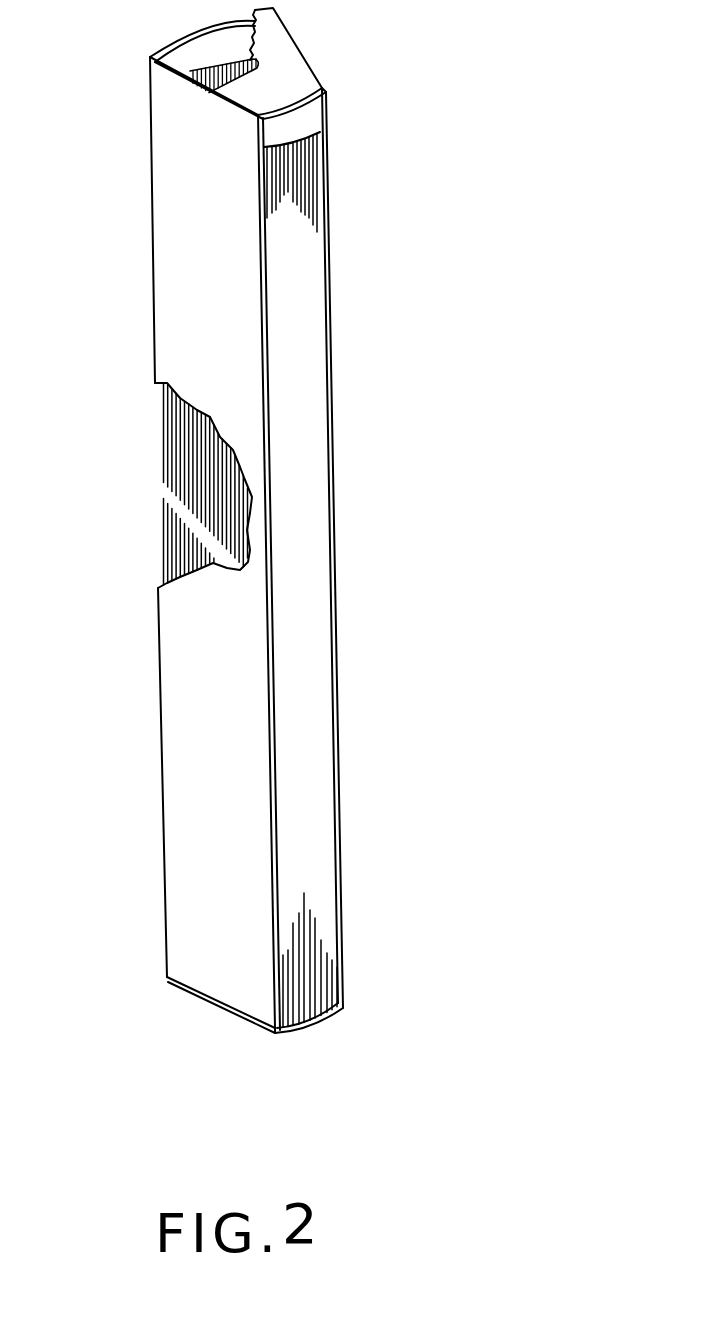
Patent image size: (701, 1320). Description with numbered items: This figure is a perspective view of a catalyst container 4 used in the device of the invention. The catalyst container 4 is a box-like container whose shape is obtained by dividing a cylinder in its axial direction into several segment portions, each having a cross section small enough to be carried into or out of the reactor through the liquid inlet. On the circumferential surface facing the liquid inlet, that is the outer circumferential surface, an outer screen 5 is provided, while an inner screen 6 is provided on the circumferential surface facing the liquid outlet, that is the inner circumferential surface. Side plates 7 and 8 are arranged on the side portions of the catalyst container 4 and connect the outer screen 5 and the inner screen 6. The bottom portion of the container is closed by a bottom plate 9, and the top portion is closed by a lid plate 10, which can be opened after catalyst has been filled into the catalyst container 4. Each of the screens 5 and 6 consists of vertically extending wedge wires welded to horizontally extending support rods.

The catalyst container 4 is at (277, 532).
The outer screen 5 is at (162, 439).
The inner screen 6 is at (305, 412).
The side plate 7 is at (180, 693).
The side plate 8 is at (337, 663).
The bottom plate 9 is at (227, 1013).
The lid plate 10 is at (273, 50).